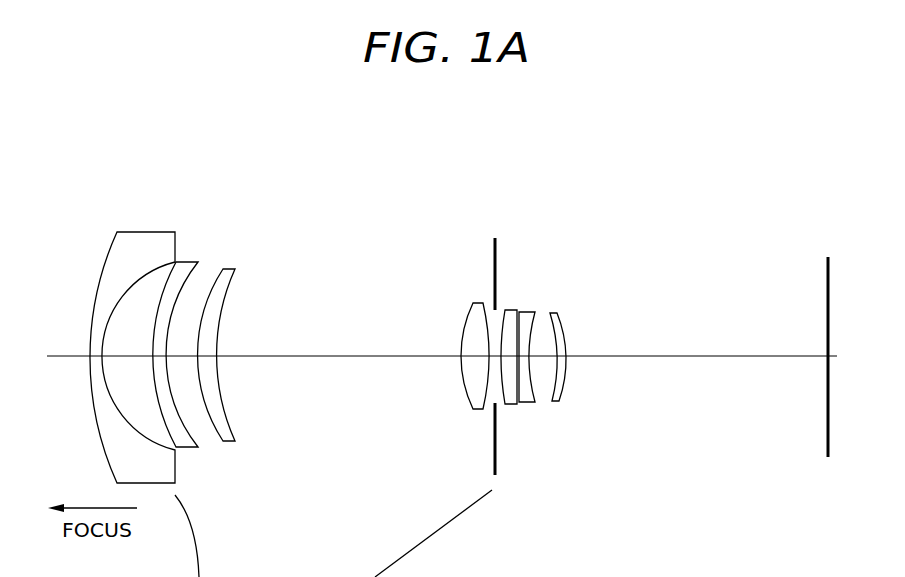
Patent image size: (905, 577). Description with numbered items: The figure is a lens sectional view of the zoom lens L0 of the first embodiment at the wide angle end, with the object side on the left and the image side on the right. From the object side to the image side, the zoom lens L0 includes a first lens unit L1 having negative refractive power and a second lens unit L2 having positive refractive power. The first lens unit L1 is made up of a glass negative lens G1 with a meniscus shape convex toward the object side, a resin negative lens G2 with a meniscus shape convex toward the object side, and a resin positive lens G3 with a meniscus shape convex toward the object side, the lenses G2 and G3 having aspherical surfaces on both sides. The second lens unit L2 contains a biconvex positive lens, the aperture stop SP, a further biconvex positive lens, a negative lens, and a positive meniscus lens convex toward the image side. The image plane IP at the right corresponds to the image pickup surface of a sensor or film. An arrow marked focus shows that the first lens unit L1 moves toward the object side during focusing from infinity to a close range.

The zoom lens L0 is at (83, 142).
The first lens unit L1 is at (240, 200).
The second lens unit L2 is at (575, 198).
The negative lens G1 is at (115, 257).
The negative lens G2 is at (186, 262).
The positive lens G3 is at (221, 294).
The aperture stop SP is at (504, 262).
The image plane IP is at (816, 280).